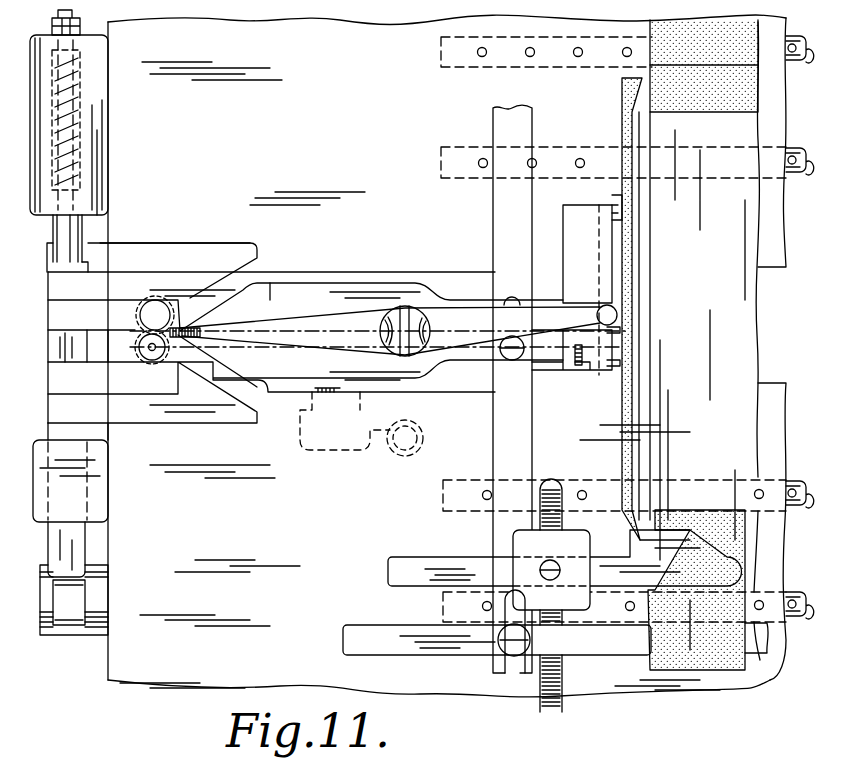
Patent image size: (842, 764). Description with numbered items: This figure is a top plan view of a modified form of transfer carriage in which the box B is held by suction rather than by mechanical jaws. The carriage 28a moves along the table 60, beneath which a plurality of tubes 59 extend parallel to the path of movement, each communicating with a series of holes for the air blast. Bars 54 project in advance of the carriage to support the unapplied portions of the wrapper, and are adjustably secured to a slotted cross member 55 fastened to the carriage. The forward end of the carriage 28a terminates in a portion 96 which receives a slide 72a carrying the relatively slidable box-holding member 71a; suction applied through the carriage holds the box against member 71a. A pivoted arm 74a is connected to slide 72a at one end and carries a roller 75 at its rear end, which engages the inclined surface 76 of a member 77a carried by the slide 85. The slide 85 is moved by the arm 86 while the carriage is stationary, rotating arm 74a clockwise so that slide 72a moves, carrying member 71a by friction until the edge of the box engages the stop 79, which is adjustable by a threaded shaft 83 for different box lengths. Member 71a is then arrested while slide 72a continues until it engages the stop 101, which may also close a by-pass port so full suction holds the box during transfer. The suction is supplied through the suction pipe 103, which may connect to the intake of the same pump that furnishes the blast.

The carriage 28a is at (282, 294).
The bars 54 is at (471, 654).
The slotted cross member 55 is at (497, 408).
The tubes 59 is at (484, 67).
The table 60 is at (167, 673).
The box-holding member 71a is at (616, 232).
The slide 72a is at (611, 263).
The arm 74a is at (357, 323).
The roller 75 is at (152, 362).
The inclined surface 76 is at (268, 322).
The member 77a is at (168, 288).
The stop 79 is at (640, 547).
The shaft 83 is at (560, 677).
The slide 85 is at (58, 352).
The arm 86 is at (72, 637).
The portion 96 is at (570, 252).
The stop 101 is at (603, 370).
The suction pipe 103 is at (379, 453).
The box B is at (645, 430).